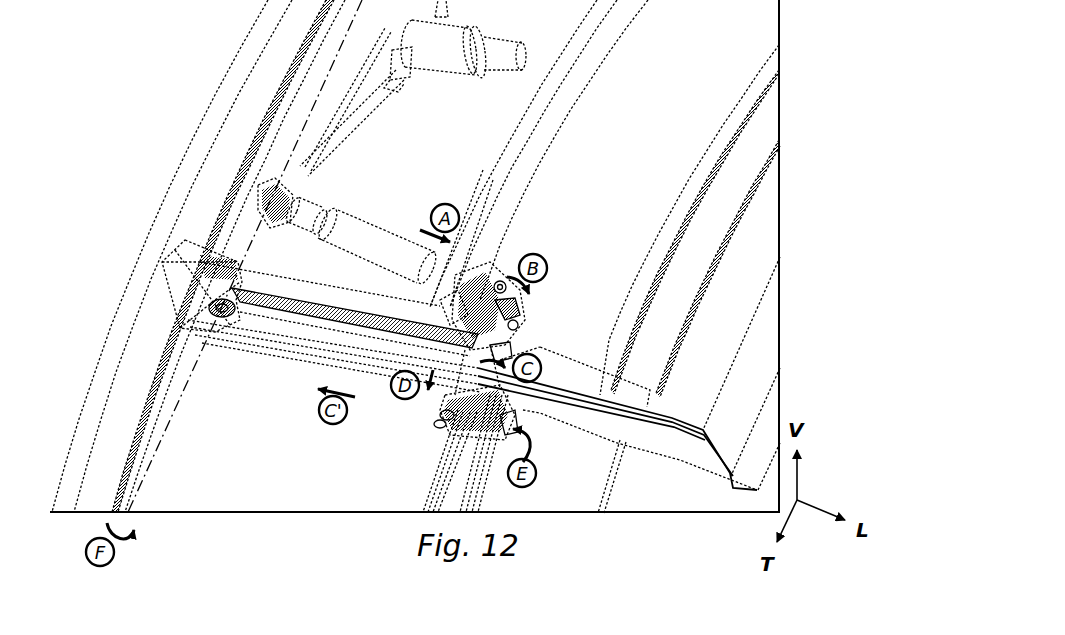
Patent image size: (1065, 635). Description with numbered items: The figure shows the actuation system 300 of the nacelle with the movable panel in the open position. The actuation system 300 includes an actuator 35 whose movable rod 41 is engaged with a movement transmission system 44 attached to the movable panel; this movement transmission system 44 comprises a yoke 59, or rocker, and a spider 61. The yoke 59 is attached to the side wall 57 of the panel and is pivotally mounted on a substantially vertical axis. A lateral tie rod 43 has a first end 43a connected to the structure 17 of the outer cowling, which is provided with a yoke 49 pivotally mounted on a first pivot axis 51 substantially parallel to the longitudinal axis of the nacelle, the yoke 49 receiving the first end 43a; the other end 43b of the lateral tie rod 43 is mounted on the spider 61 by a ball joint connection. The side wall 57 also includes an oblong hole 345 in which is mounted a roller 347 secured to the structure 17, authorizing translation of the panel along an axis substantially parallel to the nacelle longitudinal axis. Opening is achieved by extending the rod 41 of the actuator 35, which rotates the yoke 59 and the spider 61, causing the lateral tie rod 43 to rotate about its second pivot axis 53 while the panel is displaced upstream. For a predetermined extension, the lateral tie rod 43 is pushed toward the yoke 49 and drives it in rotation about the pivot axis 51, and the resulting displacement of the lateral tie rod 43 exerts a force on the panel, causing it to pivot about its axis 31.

The structure 17 is at (140, 457).
The axis 31 is at (133, 502).
The actuator 35 is at (347, 227).
The movable rod 41 is at (452, 278).
The lateral tie rod 43 is at (523, 400).
The first end 43a is at (517, 430).
The end 43b is at (500, 355).
The movement transmission system 44 is at (505, 313).
The yoke 49 is at (447, 415).
The first pivot axis 51 is at (440, 424).
The second pivot axis 53 is at (456, 393).
The side wall 57 is at (322, 329).
The yoke 59 is at (495, 307).
The spider 61 is at (513, 325).
The actuation system 300 is at (551, 285).
The oblong hole 345 is at (190, 312).
The roller 347 is at (223, 322).